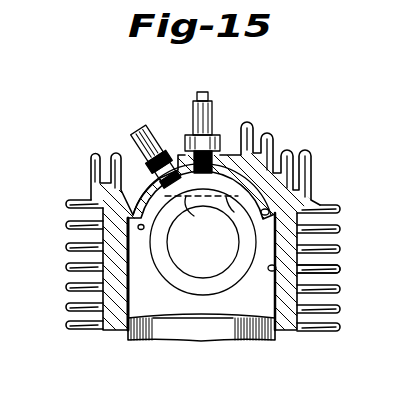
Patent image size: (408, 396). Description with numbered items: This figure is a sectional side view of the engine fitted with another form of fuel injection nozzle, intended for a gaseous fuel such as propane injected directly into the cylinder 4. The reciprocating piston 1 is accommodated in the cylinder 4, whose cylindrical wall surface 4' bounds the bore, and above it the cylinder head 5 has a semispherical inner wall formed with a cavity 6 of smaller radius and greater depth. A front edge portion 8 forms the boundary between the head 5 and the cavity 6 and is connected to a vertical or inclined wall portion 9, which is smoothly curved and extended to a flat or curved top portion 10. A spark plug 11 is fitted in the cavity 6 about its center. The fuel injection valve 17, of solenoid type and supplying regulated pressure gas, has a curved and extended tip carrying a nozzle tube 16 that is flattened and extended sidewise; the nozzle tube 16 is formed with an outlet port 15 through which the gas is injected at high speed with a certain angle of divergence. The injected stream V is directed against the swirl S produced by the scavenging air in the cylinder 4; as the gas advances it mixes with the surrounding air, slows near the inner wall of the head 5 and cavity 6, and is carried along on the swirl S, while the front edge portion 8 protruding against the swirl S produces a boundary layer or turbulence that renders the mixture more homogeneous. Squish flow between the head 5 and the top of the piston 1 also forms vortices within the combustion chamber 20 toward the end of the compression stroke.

The piston 1 is at (217, 337).
The cylinder 4 is at (220, 291).
The cylindrical wall surface 4' is at (323, 281).
The cylinder head 5 is at (140, 223).
The cavity 6 is at (185, 157).
The front edge portion 8 is at (286, 209).
The wall portion 9 is at (246, 192).
The top portion 10 is at (226, 168).
The spark plug 11 is at (214, 119).
The outlet port 15 is at (203, 242).
The nozzle tube 16 is at (134, 158).
The fuel injection valve 17 is at (157, 119).
The combustion chamber 20 is at (169, 308).
The swirling air stream S is at (240, 282).
The injected stream V is at (219, 237).